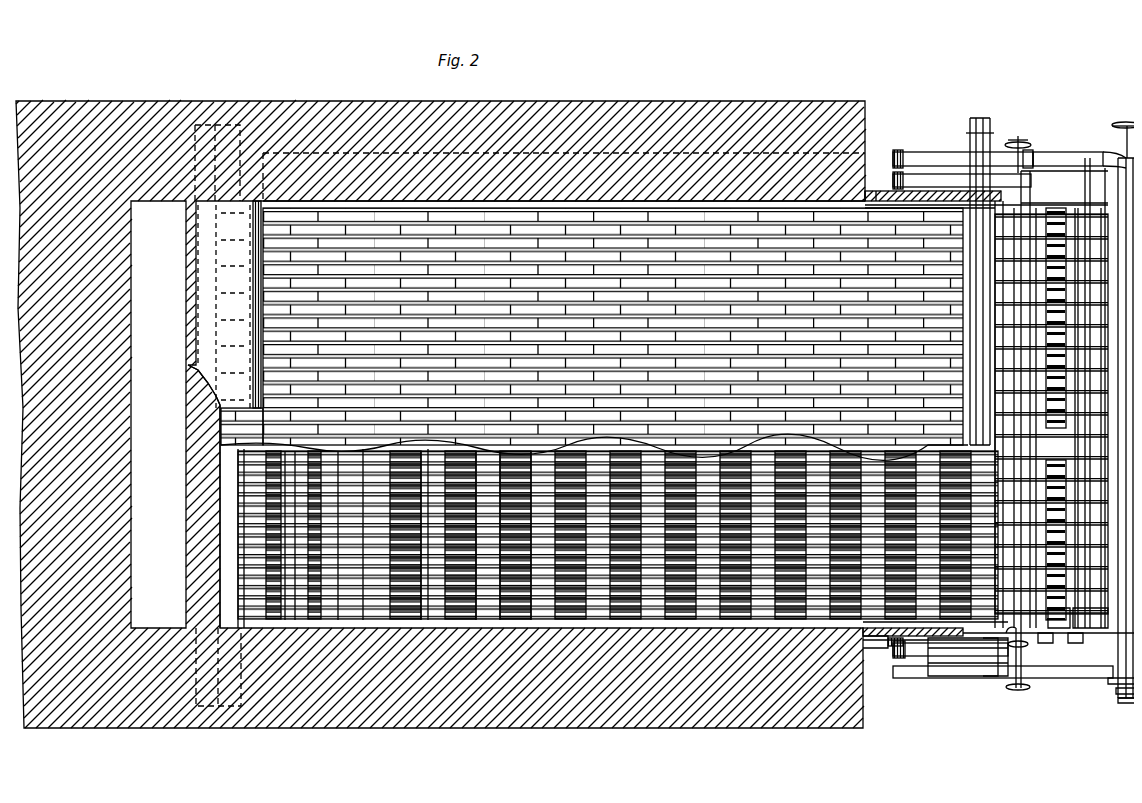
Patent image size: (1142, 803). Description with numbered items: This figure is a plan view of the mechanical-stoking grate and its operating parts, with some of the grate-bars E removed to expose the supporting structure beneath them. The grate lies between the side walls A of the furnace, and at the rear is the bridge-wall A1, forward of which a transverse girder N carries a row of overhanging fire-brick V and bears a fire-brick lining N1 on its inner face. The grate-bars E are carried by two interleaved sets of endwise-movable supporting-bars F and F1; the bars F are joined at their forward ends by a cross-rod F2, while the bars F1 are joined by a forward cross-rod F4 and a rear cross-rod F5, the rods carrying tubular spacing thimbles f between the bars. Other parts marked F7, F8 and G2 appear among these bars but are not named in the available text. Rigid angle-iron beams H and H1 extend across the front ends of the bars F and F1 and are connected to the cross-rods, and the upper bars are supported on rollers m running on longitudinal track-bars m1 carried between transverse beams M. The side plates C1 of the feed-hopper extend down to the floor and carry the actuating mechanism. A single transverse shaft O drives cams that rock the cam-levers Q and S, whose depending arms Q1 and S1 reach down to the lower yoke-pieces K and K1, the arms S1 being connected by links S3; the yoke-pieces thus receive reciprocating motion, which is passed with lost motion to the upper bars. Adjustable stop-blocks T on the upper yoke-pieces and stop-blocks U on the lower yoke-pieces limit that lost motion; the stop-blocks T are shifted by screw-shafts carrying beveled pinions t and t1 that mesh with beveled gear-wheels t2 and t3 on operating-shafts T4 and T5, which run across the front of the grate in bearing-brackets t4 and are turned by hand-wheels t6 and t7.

The side wall of the furnace A is at (578, 718).
The bridge-wall A1 is at (564, 186).
The transverse girder N is at (200, 512).
The fire-brick lining N1 is at (195, 466).
The fire-brick or tile V is at (210, 305).
The grate-bar E is at (594, 334).
The tube bank elements G2 is at (665, 612).
The cross-rod F2 is at (718, 600).
The spacing sleeve or thimble f is at (272, 612).
The tube plate F8 is at (303, 612).
The cross-rod F5 is at (332, 612).
The supporting-bar F1 is at (432, 612).
The supporting-bar F is at (470, 612).
The cross-rod F4 is at (496, 612).
The tube plate F7 is at (528, 612).
The metal beam H is at (1082, 176).
The metal beam H1 is at (990, 228).
The roller m is at (1054, 333).
The track-bar m1 is at (1054, 540).
The cam-lever S is at (935, 170).
The rotative shaft O is at (980, 125).
The adjustable stop-block T is at (900, 150).
The cam-lever Q is at (928, 170).
The side plate of the feed-hopper C1 is at (868, 185).
The stop-block U is at (1055, 148).
The beveled gear-pinion t is at (1110, 680).
The operating-shaft T4 is at (1118, 572).
The bearing-bracket t4 is at (1116, 660).
The beveled gear-wheel t2 is at (1112, 688).
The hand-wheel t6 is at (1120, 700).
The hand-wheel t7 is at (1066, 640).
The yoke-piece K is at (1088, 625).
The beveled gear-wheel t3 is at (1035, 628).
The transverse beam M is at (1050, 605).
The operating-shaft T5 is at (1010, 684).
The link S3 is at (970, 672).
The depending arm Q1 is at (905, 650).
The depending arm S1 is at (872, 642).
The yoke-piece K1 is at (990, 670).
The beveled gear-pinion t1 is at (988, 670).